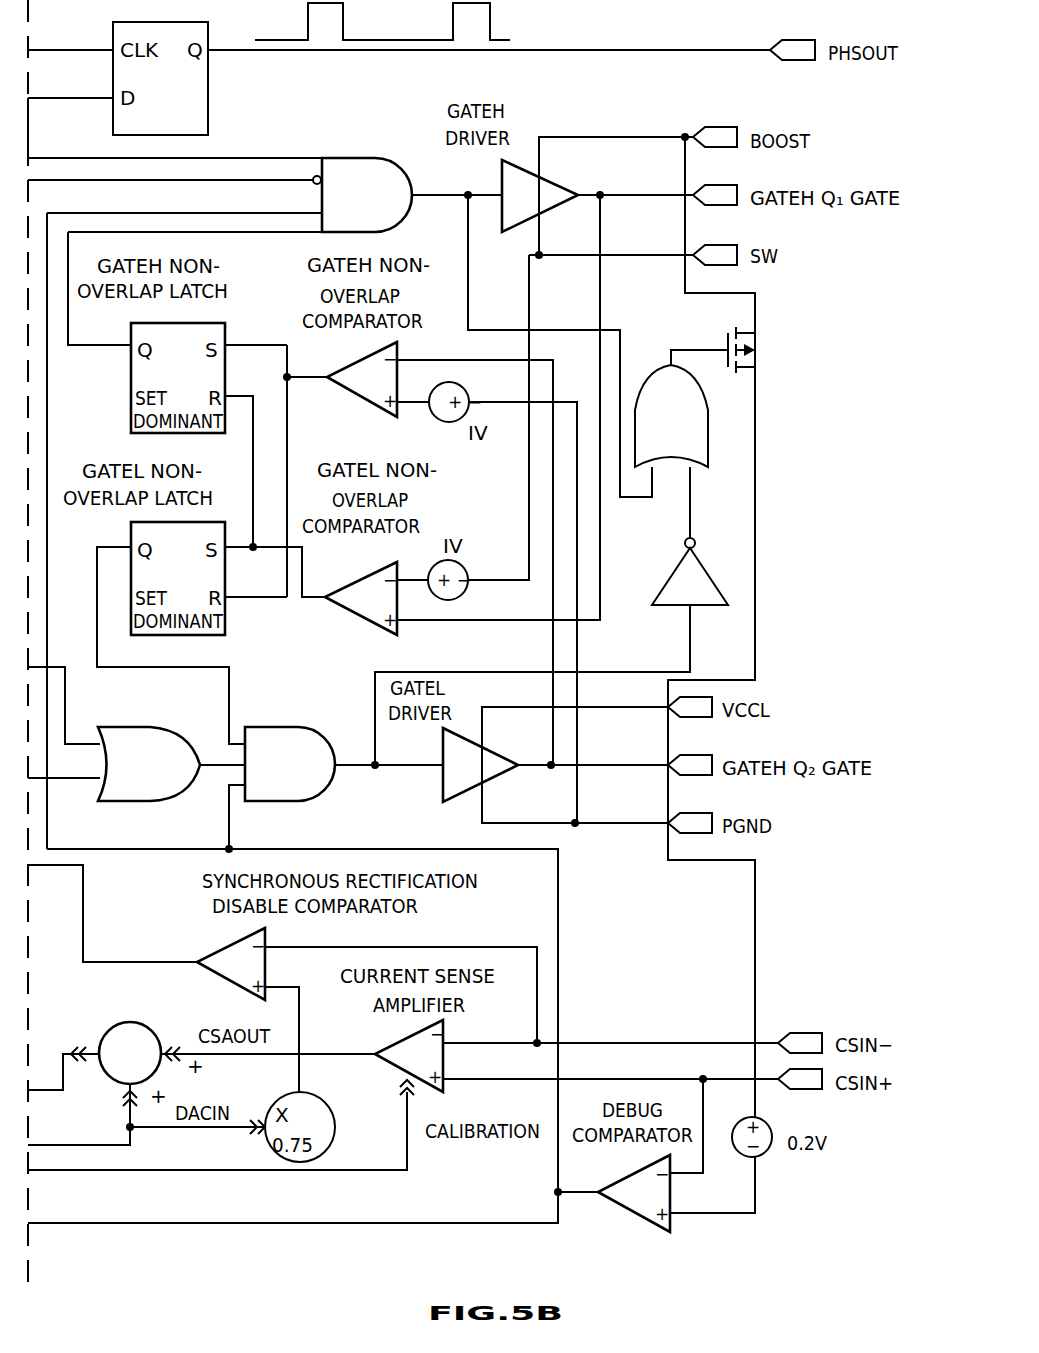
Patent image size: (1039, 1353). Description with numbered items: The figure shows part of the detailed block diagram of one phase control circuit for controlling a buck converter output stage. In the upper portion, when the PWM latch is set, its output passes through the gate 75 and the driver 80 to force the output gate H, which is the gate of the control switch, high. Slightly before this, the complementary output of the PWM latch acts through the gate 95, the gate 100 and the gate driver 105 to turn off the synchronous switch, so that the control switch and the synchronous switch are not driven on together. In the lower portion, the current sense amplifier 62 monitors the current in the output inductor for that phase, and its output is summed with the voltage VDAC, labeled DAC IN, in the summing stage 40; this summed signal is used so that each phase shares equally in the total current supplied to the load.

The gate 75 is at (347, 158).
The driver 80 is at (553, 183).
The gate 95 is at (133, 740).
The gate 100 is at (270, 725).
The gate driver 105 is at (443, 782).
The summing stage 40 is at (132, 1022).
The current sense amplifier 62 is at (443, 1030).